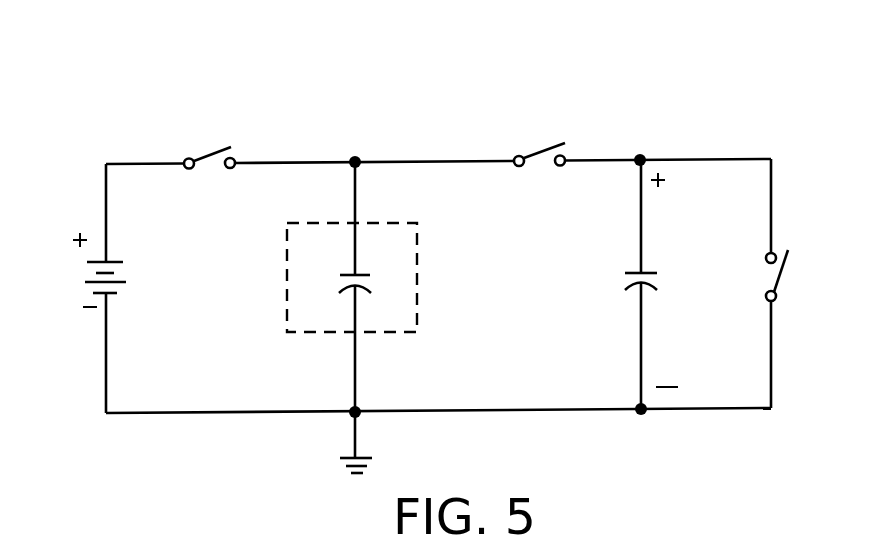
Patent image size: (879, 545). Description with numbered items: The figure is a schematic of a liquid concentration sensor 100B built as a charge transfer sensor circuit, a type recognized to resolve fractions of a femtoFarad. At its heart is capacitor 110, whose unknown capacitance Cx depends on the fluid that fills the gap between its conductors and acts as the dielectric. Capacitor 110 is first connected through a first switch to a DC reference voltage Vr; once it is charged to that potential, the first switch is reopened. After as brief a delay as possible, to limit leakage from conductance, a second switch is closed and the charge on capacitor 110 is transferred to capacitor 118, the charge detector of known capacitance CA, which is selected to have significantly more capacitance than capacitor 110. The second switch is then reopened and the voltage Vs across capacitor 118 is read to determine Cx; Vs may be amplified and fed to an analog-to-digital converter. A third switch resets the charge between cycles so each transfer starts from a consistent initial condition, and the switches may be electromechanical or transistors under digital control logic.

The liquid concentration sensor 100B is at (122, 124).
The capacitor 110 is at (417, 257).
The capacitor 118 is at (630, 268).